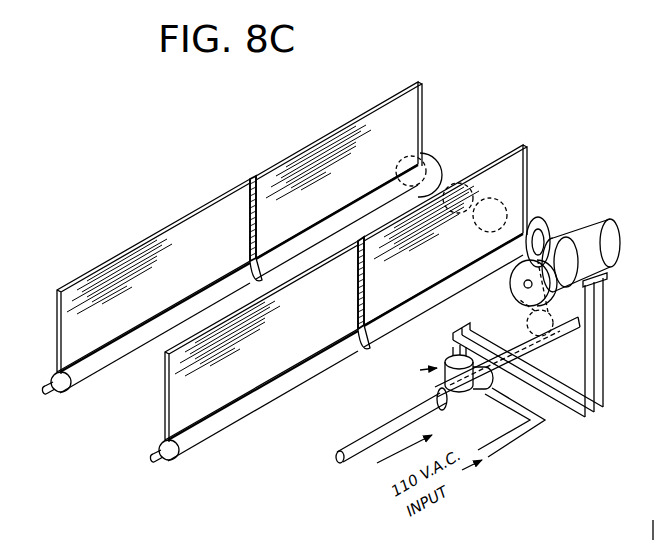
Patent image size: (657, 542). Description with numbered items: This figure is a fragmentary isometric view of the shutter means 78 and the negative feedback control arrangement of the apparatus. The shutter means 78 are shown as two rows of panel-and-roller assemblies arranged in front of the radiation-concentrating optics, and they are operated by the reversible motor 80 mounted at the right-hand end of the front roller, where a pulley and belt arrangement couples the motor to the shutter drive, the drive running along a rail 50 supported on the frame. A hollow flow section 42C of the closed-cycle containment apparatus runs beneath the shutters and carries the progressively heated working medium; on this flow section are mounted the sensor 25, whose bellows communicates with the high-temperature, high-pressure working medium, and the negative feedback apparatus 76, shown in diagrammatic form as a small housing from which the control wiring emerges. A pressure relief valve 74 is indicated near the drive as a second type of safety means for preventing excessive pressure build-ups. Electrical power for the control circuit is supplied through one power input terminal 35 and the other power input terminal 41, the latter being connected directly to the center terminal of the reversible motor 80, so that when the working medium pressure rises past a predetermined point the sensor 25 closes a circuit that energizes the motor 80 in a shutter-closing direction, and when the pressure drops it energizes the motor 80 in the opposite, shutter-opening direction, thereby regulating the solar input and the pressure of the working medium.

The shutter means 78 is at (139, 232).
The reversible motor 80 is at (595, 230).
The pressure relief valve 74 is at (528, 320).
The rail 50 is at (580, 323).
The power input terminal 35 is at (650, 409).
The power input terminal 41 is at (652, 485).
The negative feedback apparatus 76 is at (437, 367).
The hollow flow section 42C is at (352, 440).
The sensor 25 is at (465, 407).